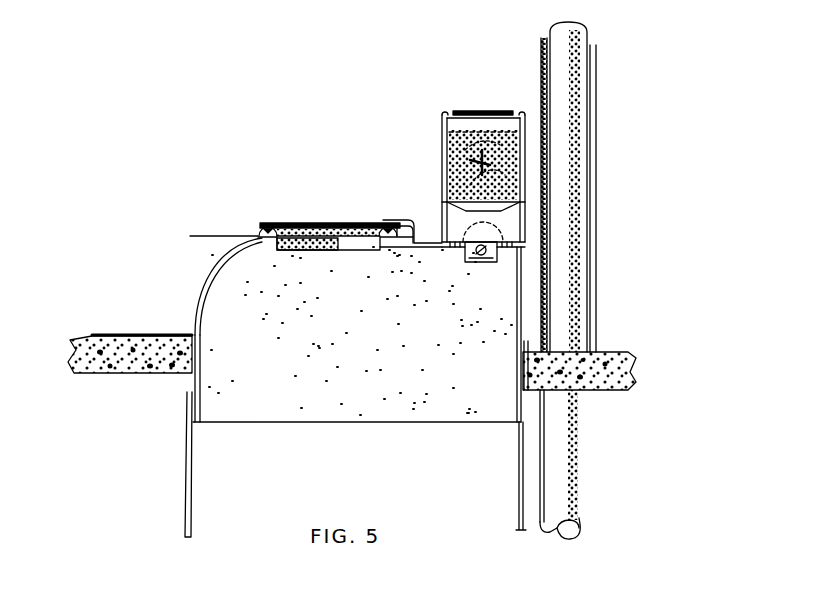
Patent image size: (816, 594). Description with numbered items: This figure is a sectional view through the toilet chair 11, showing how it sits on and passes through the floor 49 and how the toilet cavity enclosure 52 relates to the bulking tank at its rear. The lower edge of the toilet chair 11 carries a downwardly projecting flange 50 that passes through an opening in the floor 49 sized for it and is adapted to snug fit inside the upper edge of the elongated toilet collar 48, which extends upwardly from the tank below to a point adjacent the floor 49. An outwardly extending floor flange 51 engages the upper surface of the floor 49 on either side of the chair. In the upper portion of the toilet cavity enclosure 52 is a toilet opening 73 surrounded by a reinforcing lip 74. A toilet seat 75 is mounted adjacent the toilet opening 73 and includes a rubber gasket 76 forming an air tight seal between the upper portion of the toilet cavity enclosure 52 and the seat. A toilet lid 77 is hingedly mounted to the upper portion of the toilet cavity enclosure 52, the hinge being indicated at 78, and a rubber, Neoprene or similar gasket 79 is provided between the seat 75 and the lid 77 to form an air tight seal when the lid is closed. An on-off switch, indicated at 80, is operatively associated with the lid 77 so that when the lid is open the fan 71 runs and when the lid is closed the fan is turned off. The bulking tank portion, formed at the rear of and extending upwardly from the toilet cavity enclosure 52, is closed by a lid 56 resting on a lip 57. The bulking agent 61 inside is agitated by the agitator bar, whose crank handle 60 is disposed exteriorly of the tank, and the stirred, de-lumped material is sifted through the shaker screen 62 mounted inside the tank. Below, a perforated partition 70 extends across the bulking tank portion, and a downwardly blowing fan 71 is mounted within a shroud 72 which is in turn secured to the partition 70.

The toilet chair 11 is at (253, 140).
The toilet collar 48 is at (188, 392).
The floor 49 is at (118, 335).
The flange 50 is at (203, 422).
The floor flange 51 is at (188, 334).
The toilet cavity enclosure 52 is at (222, 263).
The lid 56 is at (494, 111).
The lip 57 is at (440, 118).
The crank handle 60 is at (445, 161).
The bulking agent 61 is at (462, 132).
The shaker screen 62 is at (496, 200).
The perforated partition 70 is at (444, 240).
The fan 71 is at (488, 242).
The shroud 72 is at (498, 257).
The toilet opening 73 is at (324, 266).
The reinforcing lip 74 is at (255, 257).
The toilet seat 75 is at (259, 231).
The rubber gasket 76 is at (190, 236).
The toilet lid 77 is at (341, 222).
The hinge 78 is at (388, 224).
The gasket 79 is at (266, 227).
The on-off switch 80 is at (400, 243).